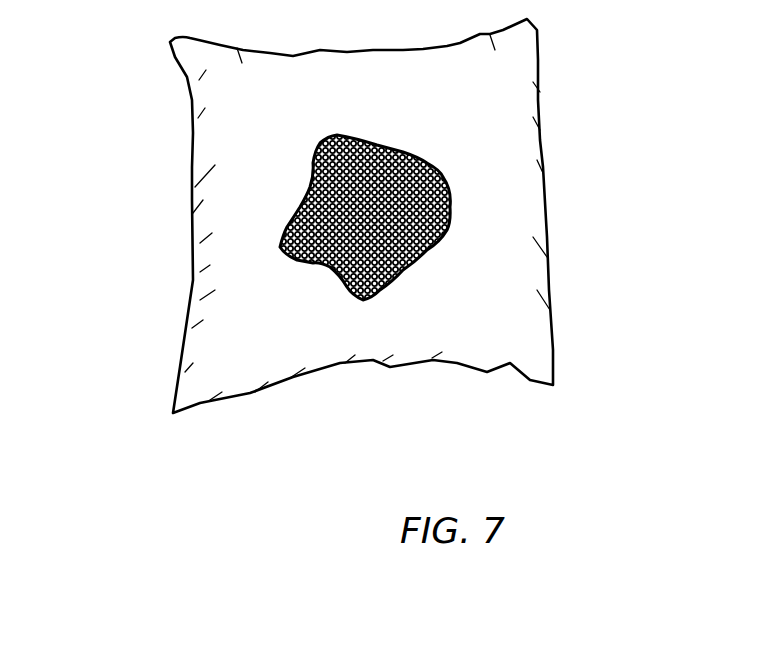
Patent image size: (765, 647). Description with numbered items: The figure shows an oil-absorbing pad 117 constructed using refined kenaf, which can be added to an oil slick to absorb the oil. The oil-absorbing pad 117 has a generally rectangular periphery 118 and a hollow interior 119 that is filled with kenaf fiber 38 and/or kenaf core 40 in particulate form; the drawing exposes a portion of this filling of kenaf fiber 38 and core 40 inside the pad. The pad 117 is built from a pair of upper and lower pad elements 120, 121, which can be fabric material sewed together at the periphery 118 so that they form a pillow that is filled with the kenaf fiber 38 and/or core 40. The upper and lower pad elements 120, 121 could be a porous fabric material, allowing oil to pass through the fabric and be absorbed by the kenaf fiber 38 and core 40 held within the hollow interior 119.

The oil-absorbing pad 117 is at (520, 73).
The periphery 118 is at (330, 53).
The hollow interior 119 is at (270, 210).
The upper pad element 120 is at (512, 326).
The lower pad element 121 is at (557, 350).
The kenaf fiber 38 is at (270, 229).
The kenaf core 40 is at (420, 207).